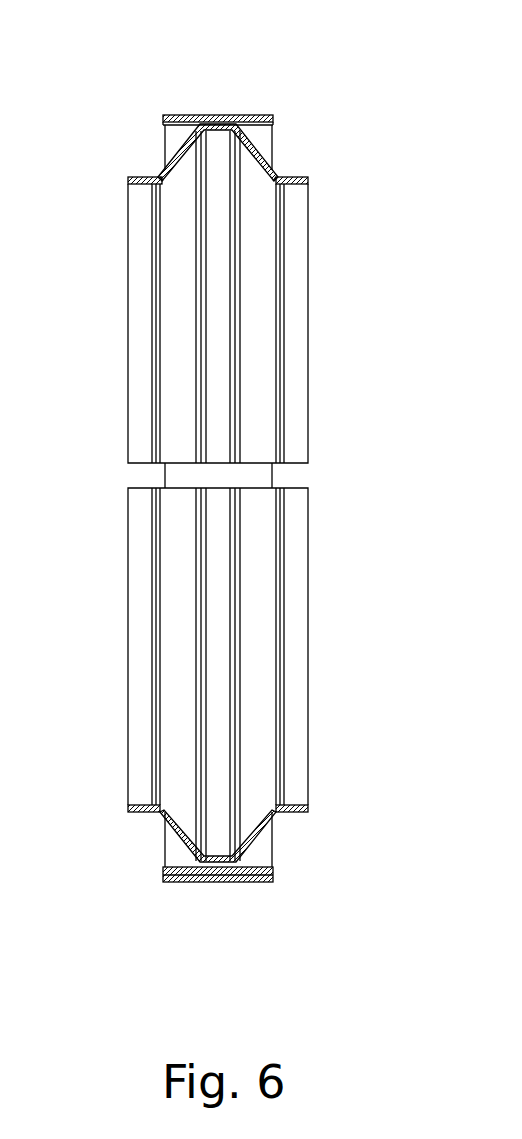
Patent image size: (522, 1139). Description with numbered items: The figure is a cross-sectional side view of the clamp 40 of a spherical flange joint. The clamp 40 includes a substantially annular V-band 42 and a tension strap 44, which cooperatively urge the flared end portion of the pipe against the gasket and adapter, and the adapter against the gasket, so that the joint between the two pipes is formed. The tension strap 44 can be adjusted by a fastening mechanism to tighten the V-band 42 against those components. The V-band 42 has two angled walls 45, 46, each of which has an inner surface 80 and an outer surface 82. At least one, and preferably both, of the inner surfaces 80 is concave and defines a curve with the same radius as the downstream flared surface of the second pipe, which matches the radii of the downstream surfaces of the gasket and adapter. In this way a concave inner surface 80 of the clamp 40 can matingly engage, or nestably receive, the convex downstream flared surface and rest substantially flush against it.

The clamp 40 is at (248, 108).
The V-band 42 is at (284, 162).
The tension strap 44 is at (180, 114).
The angled wall 45 is at (165, 140).
The angled wall 46 is at (254, 117).
The inner surface 80 is at (167, 166).
The outer surface 82 is at (162, 166).